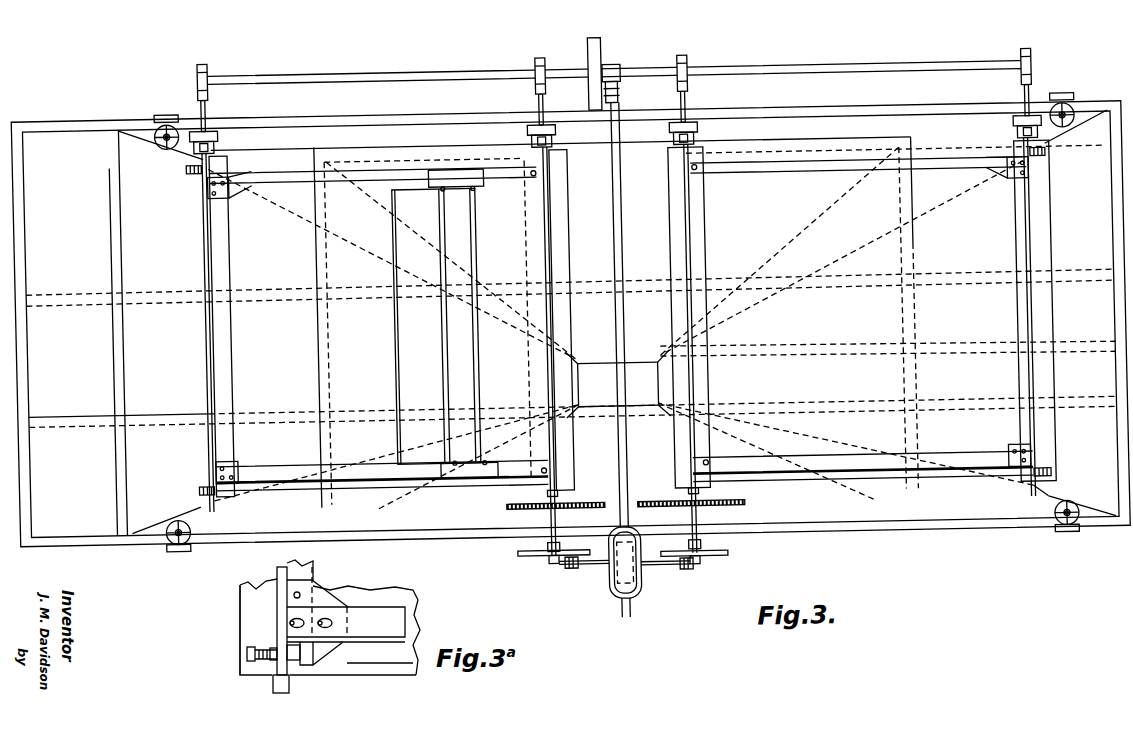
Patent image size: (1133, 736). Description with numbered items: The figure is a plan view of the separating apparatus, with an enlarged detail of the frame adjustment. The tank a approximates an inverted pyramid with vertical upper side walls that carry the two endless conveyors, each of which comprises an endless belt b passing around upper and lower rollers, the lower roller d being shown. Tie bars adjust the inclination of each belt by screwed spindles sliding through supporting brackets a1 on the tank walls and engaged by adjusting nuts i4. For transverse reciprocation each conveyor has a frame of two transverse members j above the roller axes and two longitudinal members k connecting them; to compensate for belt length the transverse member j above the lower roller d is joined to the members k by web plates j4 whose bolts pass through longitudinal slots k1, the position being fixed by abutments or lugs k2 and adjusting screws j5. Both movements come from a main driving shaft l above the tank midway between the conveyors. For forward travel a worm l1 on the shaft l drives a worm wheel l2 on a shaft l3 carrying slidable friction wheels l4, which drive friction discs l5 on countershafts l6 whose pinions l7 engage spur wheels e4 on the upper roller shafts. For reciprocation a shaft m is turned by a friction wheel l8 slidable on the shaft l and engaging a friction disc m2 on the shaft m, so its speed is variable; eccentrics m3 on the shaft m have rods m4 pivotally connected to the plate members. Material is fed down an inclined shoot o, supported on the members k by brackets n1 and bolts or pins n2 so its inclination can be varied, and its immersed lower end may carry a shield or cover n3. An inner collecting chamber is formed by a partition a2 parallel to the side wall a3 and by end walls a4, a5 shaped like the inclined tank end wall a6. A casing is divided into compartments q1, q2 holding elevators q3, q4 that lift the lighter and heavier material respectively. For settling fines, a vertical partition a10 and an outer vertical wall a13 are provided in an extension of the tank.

In FIG. 3, the tank a is at (958, 146).
In FIG. 3A, the tank a is at (264, 545).
In FIG. 3, the supporting bracket a1 is at (1068, 110).
In FIG. 3, the partition a2 is at (782, 148).
In FIG. 3, the side wall a3 is at (752, 114).
In FIG. 3, the end wall a4 is at (338, 520).
In FIG. 3A, the end wall a4 is at (344, 545).
In FIG. 3, the end wall a5 is at (908, 507).
In FIG. 3, the end wall of tank a6 is at (160, 522).
In FIG. 3, the vertical partition a10 is at (118, 330).
In FIG. 3, the vertical wall a13 is at (30, 330).
In FIG. 3, the endless belt b is at (294, 153).
In FIG. 3A, the endless belt b is at (397, 674).
In FIG. 3A, the lower roller d is at (262, 683).
In FIG. 3, the spur wheel e4 is at (660, 503).
In FIG. 3, the adjusting nut i4 is at (1080, 120).
In FIG. 3, the transverse member j is at (205, 220).
In FIG. 3A, the transverse member j is at (298, 562).
In FIG. 3, the web plate j4 is at (213, 462).
In FIG. 3A, the web plate j4 is at (286, 598).
In FIG. 3, the adjusting screw j5 is at (1050, 481).
In FIG. 3A, the adjusting screw j5 is at (250, 657).
In FIG. 3, the longitudinal member k is at (782, 172).
In FIG. 3A, the longitudinal member k is at (362, 627).
In FIG. 3, the longitudinal slot k1 is at (1012, 460).
In FIG. 3A, the longitudinal slot k1 is at (327, 619).
In FIG. 3, the abutment or lug k2 is at (1020, 500).
In FIG. 3A, the abutment or lug k2 is at (328, 656).
In FIG. 3, the main driving shaft l is at (616, 239).
In FIG. 3, the worm l1 is at (636, 586).
In FIG. 3, the worm wheel l2 is at (629, 556).
In FIG. 3, the shaft l3 is at (596, 565).
In FIG. 3, the friction wheel l4 is at (560, 565).
In FIG. 3, the friction disc l5 is at (515, 553).
In FIG. 3, the countershaft l6 is at (540, 512).
In FIG. 3, the pinion l7 is at (562, 503).
In FIG. 3, the friction wheel l8 is at (626, 92).
In FIG. 3, the shaft m is at (474, 72).
In FIG. 3, the friction disc m2 is at (595, 60).
In FIG. 3, the eccentric m3 is at (203, 64).
In FIG. 3, the eccentric rod m4 is at (204, 115).
In FIG. 3, the bracket n1 is at (460, 180).
In FIG. 3, the bolt or pin n2 is at (460, 190).
In FIG. 3, the shield or cover n3 is at (420, 318).
In FIG. 3, the inclined shoot o is at (456, 340).
In FIG. 3, the casing compartment q1 is at (1116, 290).
In FIG. 3, the casing compartment q2 is at (1125, 415).
In FIG. 3, the elevator or conveyor q3 is at (1121, 340).
In FIG. 3, the elevator or conveyor q4 is at (1121, 380).